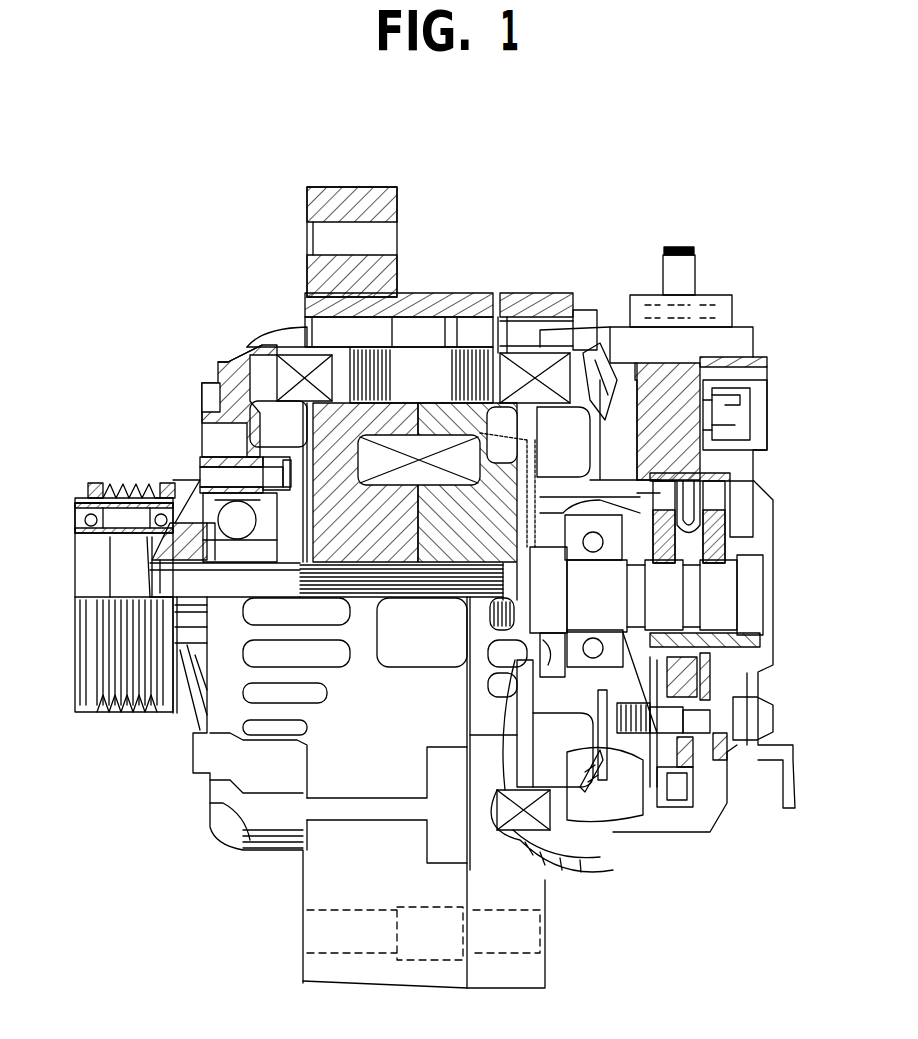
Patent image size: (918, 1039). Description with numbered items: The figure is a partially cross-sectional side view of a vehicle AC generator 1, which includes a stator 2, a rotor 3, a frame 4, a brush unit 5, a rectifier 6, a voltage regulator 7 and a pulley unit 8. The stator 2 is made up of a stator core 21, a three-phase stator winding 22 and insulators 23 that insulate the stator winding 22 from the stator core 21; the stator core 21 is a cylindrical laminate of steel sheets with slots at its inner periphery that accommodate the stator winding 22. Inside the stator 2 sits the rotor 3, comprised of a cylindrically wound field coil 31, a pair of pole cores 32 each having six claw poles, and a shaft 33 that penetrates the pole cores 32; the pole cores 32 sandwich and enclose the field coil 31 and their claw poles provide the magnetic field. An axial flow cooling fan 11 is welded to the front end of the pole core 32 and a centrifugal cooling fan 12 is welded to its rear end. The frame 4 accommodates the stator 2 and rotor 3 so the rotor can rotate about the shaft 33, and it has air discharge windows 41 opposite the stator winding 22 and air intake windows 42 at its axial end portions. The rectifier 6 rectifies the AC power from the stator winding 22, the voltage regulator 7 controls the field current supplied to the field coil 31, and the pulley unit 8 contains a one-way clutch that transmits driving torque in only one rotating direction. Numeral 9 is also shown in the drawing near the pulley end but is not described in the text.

The vehicle AC generator 1 is at (715, 230).
The stator 2 is at (413, 362).
The stator core 21 is at (453, 358).
The three-phase stator winding 22 is at (273, 326).
The insulators 23 is at (573, 293).
The rotor 3 is at (293, 420).
The field coil 31 is at (400, 440).
The pole cores 32 is at (602, 330).
The shaft 33 is at (177, 583).
The frame 4 is at (322, 877).
The air discharge windows 41 is at (243, 660).
The air intake windows 42 is at (212, 437).
The axial flow cooling fan 11 is at (200, 393).
The centrifugal cooling fan 12 is at (557, 427).
The brush unit 5 is at (757, 480).
The rectifier 6 is at (740, 753).
The voltage regulator 7 is at (760, 393).
The pulley unit 8 is at (62, 613).
The pulley nut 9 is at (72, 491).